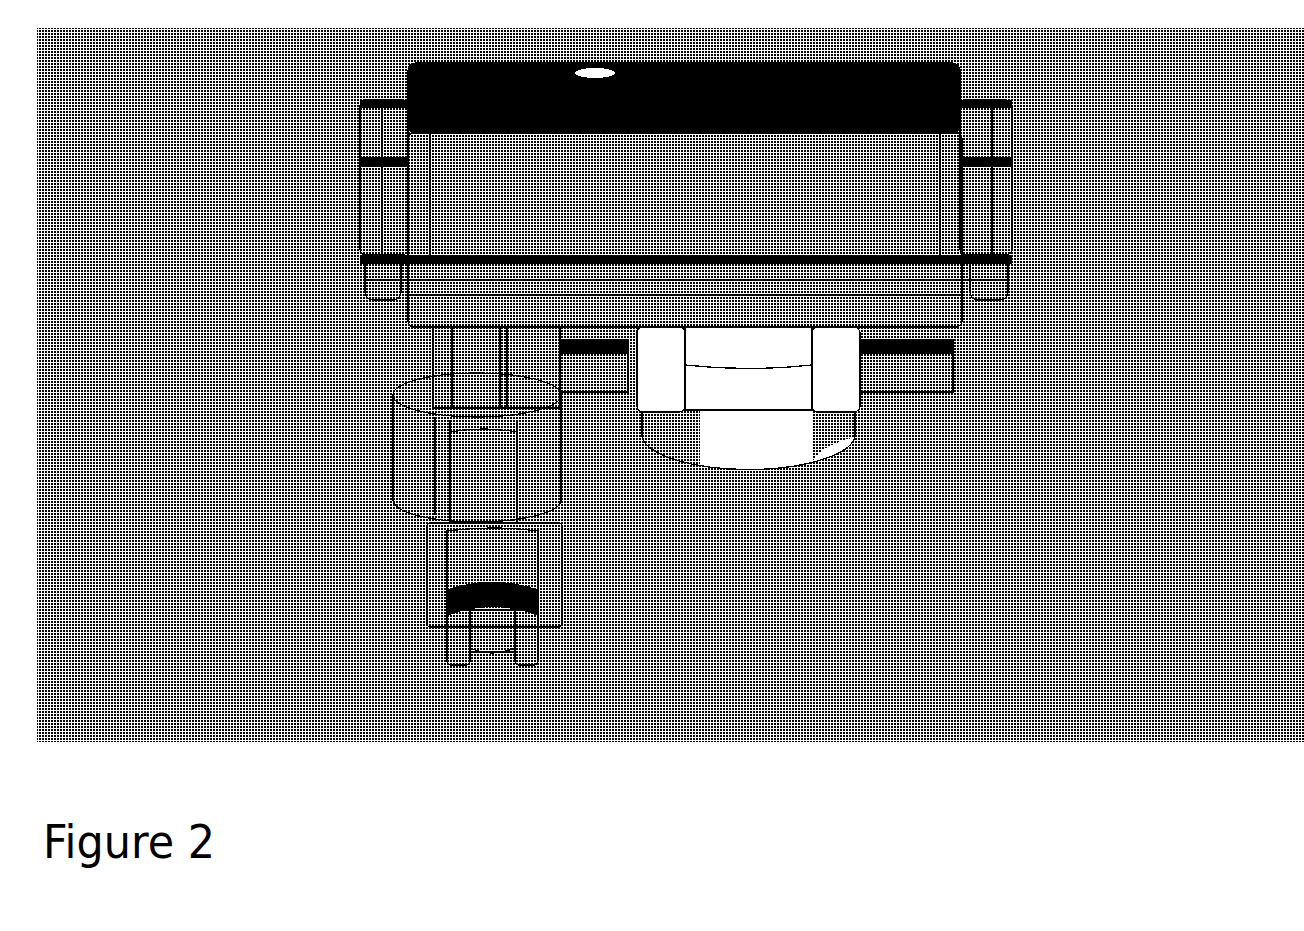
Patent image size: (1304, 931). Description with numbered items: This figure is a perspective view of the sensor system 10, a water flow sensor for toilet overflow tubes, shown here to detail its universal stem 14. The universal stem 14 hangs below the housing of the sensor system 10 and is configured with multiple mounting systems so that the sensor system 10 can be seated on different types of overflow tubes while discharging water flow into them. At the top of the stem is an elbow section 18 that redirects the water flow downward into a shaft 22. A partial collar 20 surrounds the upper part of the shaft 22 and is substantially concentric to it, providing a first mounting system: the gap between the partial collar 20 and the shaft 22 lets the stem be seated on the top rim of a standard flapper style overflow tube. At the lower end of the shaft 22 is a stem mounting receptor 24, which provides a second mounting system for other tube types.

The sensor system 10 is at (1088, 256).
The universal stem 14 is at (637, 542).
The elbow section 18 is at (433, 362).
The partial collar 20 is at (397, 478).
The shaft 22 is at (427, 575).
The stem mounting receptor 24 is at (498, 672).